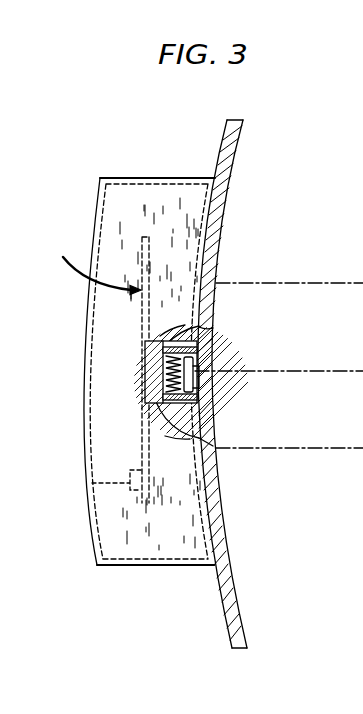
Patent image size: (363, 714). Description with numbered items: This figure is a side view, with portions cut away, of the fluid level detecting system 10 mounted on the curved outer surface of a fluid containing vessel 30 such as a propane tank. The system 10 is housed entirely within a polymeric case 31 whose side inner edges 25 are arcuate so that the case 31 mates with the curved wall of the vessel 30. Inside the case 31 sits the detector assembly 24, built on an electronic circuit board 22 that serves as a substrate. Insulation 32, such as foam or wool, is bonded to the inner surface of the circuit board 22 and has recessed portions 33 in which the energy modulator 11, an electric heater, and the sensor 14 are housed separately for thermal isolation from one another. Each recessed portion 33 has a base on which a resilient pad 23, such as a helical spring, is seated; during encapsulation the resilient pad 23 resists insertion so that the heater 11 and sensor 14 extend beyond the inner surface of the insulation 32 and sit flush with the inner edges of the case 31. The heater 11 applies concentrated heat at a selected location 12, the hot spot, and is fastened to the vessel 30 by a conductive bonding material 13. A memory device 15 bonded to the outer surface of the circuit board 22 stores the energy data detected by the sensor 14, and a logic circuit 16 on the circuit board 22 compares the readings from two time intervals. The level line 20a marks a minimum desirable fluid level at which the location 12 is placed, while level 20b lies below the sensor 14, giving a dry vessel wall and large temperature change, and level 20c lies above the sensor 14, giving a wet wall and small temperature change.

The system 10 is at (125, 174).
The energy modulator 11 is at (194, 373).
The selected location 12 is at (205, 357).
The bonding material 13 is at (199, 375).
The sensor 14 is at (184, 386).
The memory device 15 is at (92, 483).
The logic circuit 16 is at (142, 268).
The fluid level 20a is at (315, 371).
The fluid level 20b is at (314, 448).
The fluid level 20c is at (315, 283).
The circuit board 22 is at (134, 384).
The resilient pad 23 is at (160, 437).
The detector assembly 24 is at (95, 265).
The side inner edges 25 is at (213, 230).
The vessel 30 is at (237, 582).
The case 31 is at (137, 567).
The insulation 32 is at (208, 437).
The recessed portions 33 is at (148, 344).